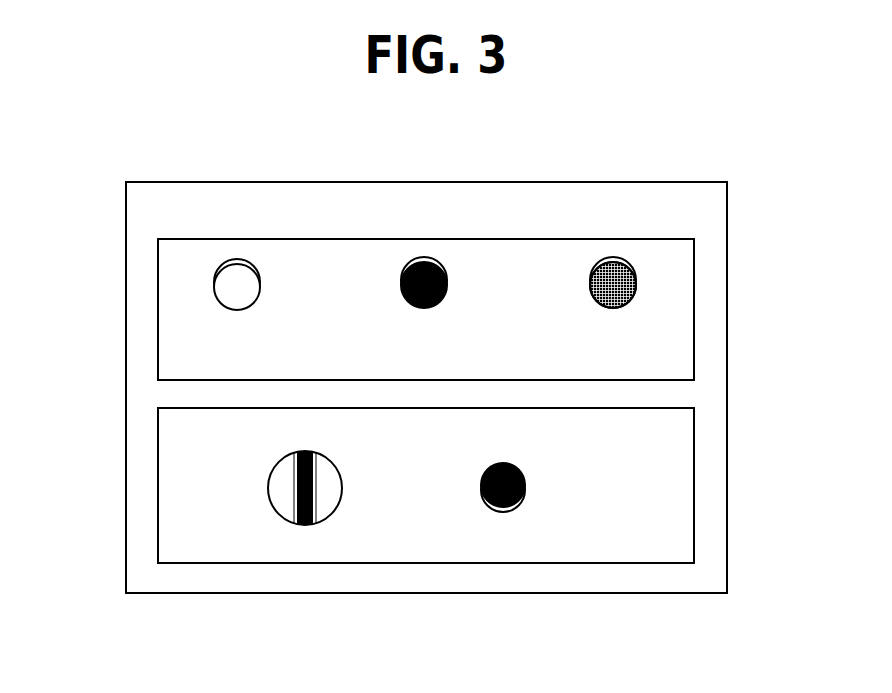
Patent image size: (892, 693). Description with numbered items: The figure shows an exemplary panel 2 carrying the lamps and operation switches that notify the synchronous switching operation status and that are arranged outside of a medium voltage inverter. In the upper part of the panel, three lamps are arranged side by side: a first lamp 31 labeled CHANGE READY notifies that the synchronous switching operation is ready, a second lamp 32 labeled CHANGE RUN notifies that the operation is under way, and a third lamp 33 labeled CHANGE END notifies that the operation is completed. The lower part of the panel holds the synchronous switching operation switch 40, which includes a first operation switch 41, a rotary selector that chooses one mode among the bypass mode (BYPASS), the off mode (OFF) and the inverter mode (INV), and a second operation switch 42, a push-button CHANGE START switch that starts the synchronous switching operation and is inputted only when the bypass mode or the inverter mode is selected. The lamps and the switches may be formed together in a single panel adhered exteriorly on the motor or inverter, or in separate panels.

The operation panel 2 is at (675, 182).
The first lamp 31 is at (215, 283).
The second lamp 32 is at (432, 262).
The third lamp 33 is at (636, 278).
The synchronous switching operation switch 40 is at (694, 452).
The first operation switch 41 is at (282, 517).
The second operation switch 42 is at (510, 507).